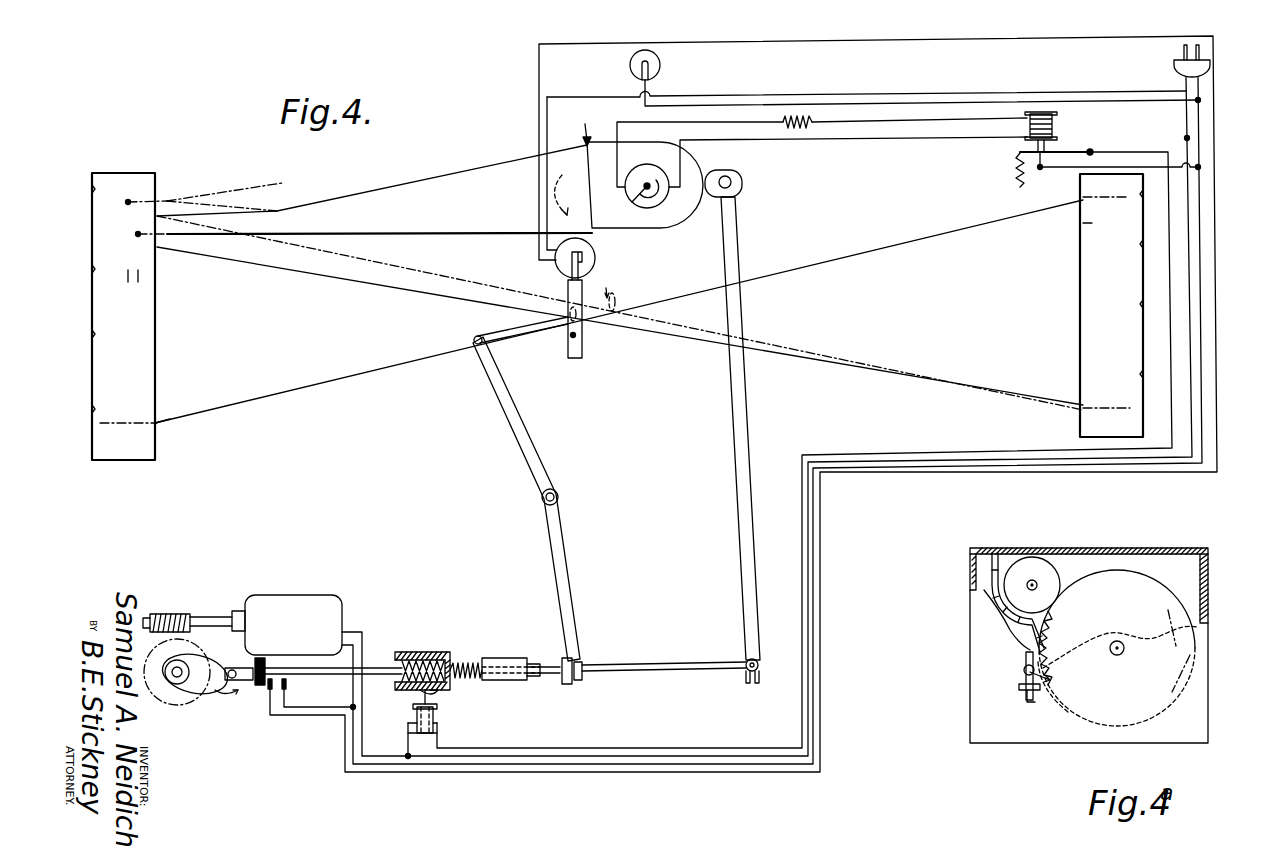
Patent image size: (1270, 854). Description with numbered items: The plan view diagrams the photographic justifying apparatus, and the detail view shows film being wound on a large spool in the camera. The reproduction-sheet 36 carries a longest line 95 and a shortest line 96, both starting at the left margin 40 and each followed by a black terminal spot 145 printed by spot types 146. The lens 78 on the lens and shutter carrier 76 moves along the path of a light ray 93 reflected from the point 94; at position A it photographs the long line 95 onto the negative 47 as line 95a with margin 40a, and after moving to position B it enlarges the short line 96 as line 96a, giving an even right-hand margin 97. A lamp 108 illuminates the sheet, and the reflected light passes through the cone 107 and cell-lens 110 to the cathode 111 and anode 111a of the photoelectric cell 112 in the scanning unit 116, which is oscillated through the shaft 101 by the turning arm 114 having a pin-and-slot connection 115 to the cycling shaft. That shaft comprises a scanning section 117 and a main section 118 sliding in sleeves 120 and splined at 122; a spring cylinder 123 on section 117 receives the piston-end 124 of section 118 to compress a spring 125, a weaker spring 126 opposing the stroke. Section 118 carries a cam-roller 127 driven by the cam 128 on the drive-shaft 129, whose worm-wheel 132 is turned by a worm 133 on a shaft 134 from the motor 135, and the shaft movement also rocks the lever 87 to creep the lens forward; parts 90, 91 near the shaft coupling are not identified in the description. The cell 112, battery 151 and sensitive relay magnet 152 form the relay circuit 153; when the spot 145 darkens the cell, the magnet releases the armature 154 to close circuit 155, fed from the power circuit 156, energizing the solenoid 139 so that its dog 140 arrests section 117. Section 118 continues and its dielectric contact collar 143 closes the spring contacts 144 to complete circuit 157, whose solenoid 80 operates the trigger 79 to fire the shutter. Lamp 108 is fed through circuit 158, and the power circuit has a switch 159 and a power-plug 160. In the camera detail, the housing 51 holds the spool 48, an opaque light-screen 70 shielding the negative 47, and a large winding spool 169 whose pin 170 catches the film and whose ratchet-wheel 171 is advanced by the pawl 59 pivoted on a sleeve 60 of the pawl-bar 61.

In FIG. 4, the reproduction-sheet 36 is at (123, 316).
In FIG. 4, the left margin 40 is at (110, 424).
In FIG. 4, the negative 47 is at (1111, 305).
In FIG. 4A, the negative 47 is at (1055, 613).
In FIG. 4A, the spool 48 is at (1032, 585).
In FIG. 4A, the housing 51 is at (1126, 636).
In FIG. 4A, the pawl 59 is at (1023, 670).
In FIG. 4A, the sleeve 60 is at (1026, 685).
In FIG. 4A, the pawl-bar 61 is at (1028, 699).
In FIG. 4A, the light-screen 70 is at (1011, 602).
In FIG. 4, the lens and shutter carrier 76 is at (572, 360).
In FIG. 4, the lens 78 is at (614, 295).
In FIG. 4, the trigger 79 is at (570, 268).
In FIG. 4, the solenoid 80 is at (596, 258).
In FIG. 4, the lever 87 is at (533, 443).
In FIG. 4, the coupling block 90 is at (576, 657).
In FIG. 4, the coupling pin 91 is at (579, 682).
In FIG. 4, the ray of light 93 is at (372, 372).
In FIG. 4, the point 94 is at (158, 424).
In FIG. 4, the longest line 95 is at (127, 240).
In FIG. 4, the shortest line 96 is at (140, 272).
In FIG. 4, the right-hand margin 97 is at (1118, 407).
In FIG. 4, the shaft 101 is at (731, 180).
In FIG. 4, the cone 107 is at (418, 182).
In FIG. 4, the lamp 108 is at (661, 67).
In FIG. 4, the cell-lens 110 is at (629, 185).
In FIG. 4, the cathode 111 is at (657, 195).
In FIG. 4, the anode 111a is at (633, 203).
In FIG. 4, the photoelectric cell 112 is at (653, 170).
In FIG. 4, the unit-shaft-turning arm 114 is at (752, 461).
In FIG. 4, the pin-and-slot connection 115 is at (759, 664).
In FIG. 4, the photoelectric unit 116 is at (578, 132).
In FIG. 4, the scanning shaft-section 117 is at (670, 663).
In FIG. 4, the main cycling-shaft section 118 is at (380, 668).
In FIG. 4, the sleeves 120 is at (490, 681).
In FIG. 4, the splines 122 is at (522, 678).
In FIG. 4, the spring cylinder 123 is at (449, 656).
In FIG. 4, the piston-end 124 is at (412, 652).
In FIG. 4, the spring 125 is at (432, 660).
In FIG. 4, the second compression spring 126 is at (470, 663).
In FIG. 4, the cam-roller 127 is at (235, 666).
In FIG. 4, the cam 128 is at (236, 695).
In FIG. 4, the drive-shaft 129 is at (195, 674).
In FIG. 4, the worm-wheel 132 is at (193, 654).
In FIG. 4, the worm 133 is at (175, 608).
In FIG. 4, the shaft 134 is at (214, 616).
In FIG. 4, the motor 135 is at (293, 625).
In FIG. 4, the solenoid 139 is at (435, 714).
In FIG. 4, the dog 140 is at (420, 692).
In FIG. 4, the contact collar 143 is at (262, 657).
In FIG. 4, the spring contacts 144 is at (288, 684).
In FIG. 4, the black terminal spot 145 is at (126, 201).
In FIG. 4, the spot types 146 is at (362, 227).
In FIG. 4, the battery 151 is at (812, 124).
In FIG. 4, the sensitive relay magnet 152 is at (1027, 125).
In FIG. 4, the relay circuit 153 is at (866, 140).
In FIG. 4, the armature 154 is at (1073, 150).
In FIG. 4, the circuit 155 is at (1146, 151).
In FIG. 4, the power circuit 156 is at (982, 461).
In FIG. 4, the circuit 157 is at (538, 137).
In FIG. 4, the circuit 158 is at (919, 93).
In FIG. 4, the switch 159 is at (1184, 136).
In FIG. 4, the power-plug 160 is at (1174, 70).
In FIG. 4A, the winding spool 169 is at (1126, 571).
In FIG. 4A, the pin 170 is at (1060, 708).
In FIG. 4A, the ratchet-wheel 171 is at (1181, 651).
In FIG. 4, the left-hand margin on negative 40a is at (1098, 192).
In FIG. 4, the photographed long line 95a is at (1083, 223).
In FIG. 4, the photographed short line 96a is at (1098, 227).